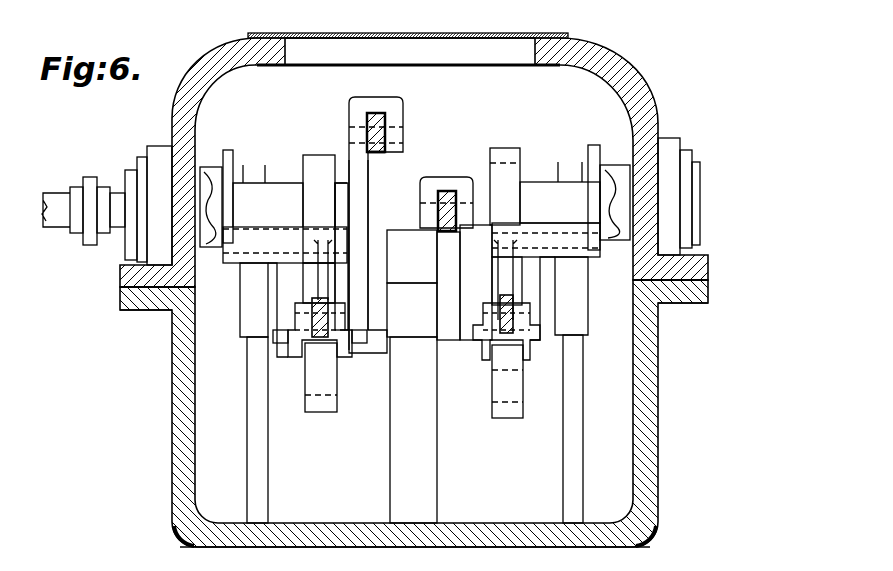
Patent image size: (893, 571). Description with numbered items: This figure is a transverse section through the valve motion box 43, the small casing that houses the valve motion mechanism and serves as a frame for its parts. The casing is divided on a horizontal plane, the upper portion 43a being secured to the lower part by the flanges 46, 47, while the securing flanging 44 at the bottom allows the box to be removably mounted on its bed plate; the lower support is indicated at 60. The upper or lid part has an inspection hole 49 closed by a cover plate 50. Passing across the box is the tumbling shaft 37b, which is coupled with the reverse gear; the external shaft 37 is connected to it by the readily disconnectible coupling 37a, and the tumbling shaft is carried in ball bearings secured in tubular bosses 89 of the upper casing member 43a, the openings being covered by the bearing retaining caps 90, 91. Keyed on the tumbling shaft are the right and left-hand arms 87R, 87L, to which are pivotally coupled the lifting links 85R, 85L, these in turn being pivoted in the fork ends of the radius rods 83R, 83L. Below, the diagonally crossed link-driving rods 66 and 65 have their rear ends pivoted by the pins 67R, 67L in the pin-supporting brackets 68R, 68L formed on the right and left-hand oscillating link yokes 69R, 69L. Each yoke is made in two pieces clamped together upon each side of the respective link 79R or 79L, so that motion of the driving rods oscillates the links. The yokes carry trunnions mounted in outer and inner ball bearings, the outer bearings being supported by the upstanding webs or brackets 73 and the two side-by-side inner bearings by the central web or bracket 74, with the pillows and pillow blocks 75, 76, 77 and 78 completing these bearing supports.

The shaft 37 is at (58, 197).
The coupling 37a is at (92, 177).
The tumbling shaft 37b is at (283, 187).
The valve motion box 43 is at (650, 408).
The upper portion of casing 43a is at (222, 72).
The securing flanging 44 is at (180, 530).
The flange 46 is at (128, 275).
The flange 47 is at (130, 298).
The inspection hole 49 is at (466, 56).
The cover plate 50 is at (385, 34).
The base 60 is at (415, 559).
The link-driving rod 65 is at (440, 237).
The link-driving rod 66 is at (382, 152).
The pin 67R is at (347, 133).
The pin 67L is at (465, 202).
The pin-supporting bracket 68R is at (395, 118).
The pin-supporting bracket 68L is at (430, 192).
The oscillating link yoke 69R is at (358, 218).
The oscillating link yoke 69L is at (476, 282).
The upstanding web or bracket 73 is at (253, 437).
The central web or bracket 74 is at (413, 413).
The pillow 75 is at (253, 319).
The pillow block 76 is at (412, 310).
The pillow 77 is at (253, 276).
The pillow block 78 is at (412, 256).
The link 79R is at (330, 405).
The link 79L is at (510, 410).
The radius rod 83R is at (330, 328).
The radius rod 83L is at (515, 327).
The lifting link 85R is at (320, 287).
The lifting link 85L is at (495, 278).
The arm 87R is at (232, 205).
The arm 87L is at (598, 200).
The tubular boss 89 is at (155, 147).
The bearing retaining cap 90 is at (137, 240).
The bearing retaining cap 91 is at (695, 202).